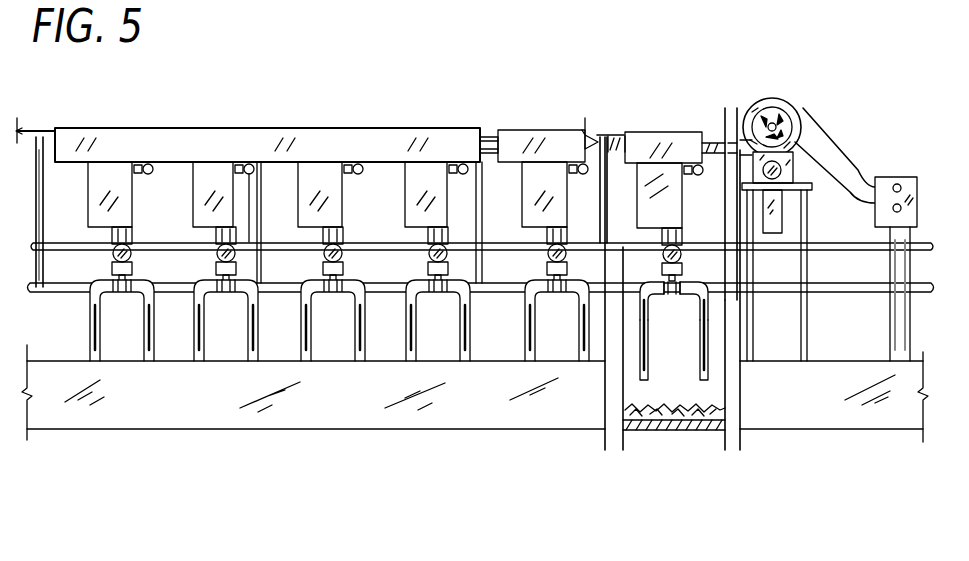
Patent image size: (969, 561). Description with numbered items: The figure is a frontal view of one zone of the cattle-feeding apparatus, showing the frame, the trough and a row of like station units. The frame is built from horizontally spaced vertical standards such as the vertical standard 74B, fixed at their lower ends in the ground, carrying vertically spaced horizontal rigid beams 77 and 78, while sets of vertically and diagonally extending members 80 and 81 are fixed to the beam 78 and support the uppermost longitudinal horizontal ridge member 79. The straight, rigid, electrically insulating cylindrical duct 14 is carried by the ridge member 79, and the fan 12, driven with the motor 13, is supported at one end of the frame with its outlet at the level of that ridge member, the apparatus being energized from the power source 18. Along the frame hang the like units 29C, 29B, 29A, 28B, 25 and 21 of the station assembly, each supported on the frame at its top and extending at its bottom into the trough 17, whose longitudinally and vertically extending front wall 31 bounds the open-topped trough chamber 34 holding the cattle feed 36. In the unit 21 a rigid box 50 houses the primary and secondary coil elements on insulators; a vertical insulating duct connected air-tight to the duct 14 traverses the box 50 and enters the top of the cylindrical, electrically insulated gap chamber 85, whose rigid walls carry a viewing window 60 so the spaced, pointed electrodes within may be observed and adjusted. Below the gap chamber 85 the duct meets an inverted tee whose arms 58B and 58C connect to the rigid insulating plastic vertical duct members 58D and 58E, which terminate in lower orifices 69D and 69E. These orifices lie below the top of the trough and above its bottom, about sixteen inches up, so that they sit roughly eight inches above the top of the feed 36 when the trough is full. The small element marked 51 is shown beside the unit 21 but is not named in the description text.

The fan 12 is at (770, 124).
The motor 13 is at (801, 119).
The duct 14 is at (489, 136).
The trough 17 is at (863, 447).
The power source 18 is at (905, 176).
The unit 21 is at (628, 130).
The unit 25 is at (532, 178).
The unit 28B is at (425, 188).
The unit 29A is at (320, 178).
The unit 29B is at (210, 190).
The unit 29C is at (105, 142).
The front wall 31 is at (518, 405).
The trough chamber 34 is at (675, 399).
The cattle feed 36 is at (700, 406).
The box 50 is at (659, 195).
The valve 51 is at (694, 165).
The tee arm 58B is at (640, 292).
The tee arm 58C is at (698, 297).
The vertical duct member 58D is at (640, 346).
The vertical duct member 58E is at (704, 344).
The viewing window 60 is at (690, 257).
The lower orifice 69D is at (612, 400).
The lower orifice 69E is at (740, 388).
The vertical standard 74B is at (300, 362).
The beam 77 is at (830, 294).
The beam 78 is at (376, 244).
The ridge member 79 is at (30, 128).
The vertical and diagonal member 80 is at (259, 222).
The vertical and diagonal member 81 is at (44, 229).
The gap chamber 85 is at (694, 243).